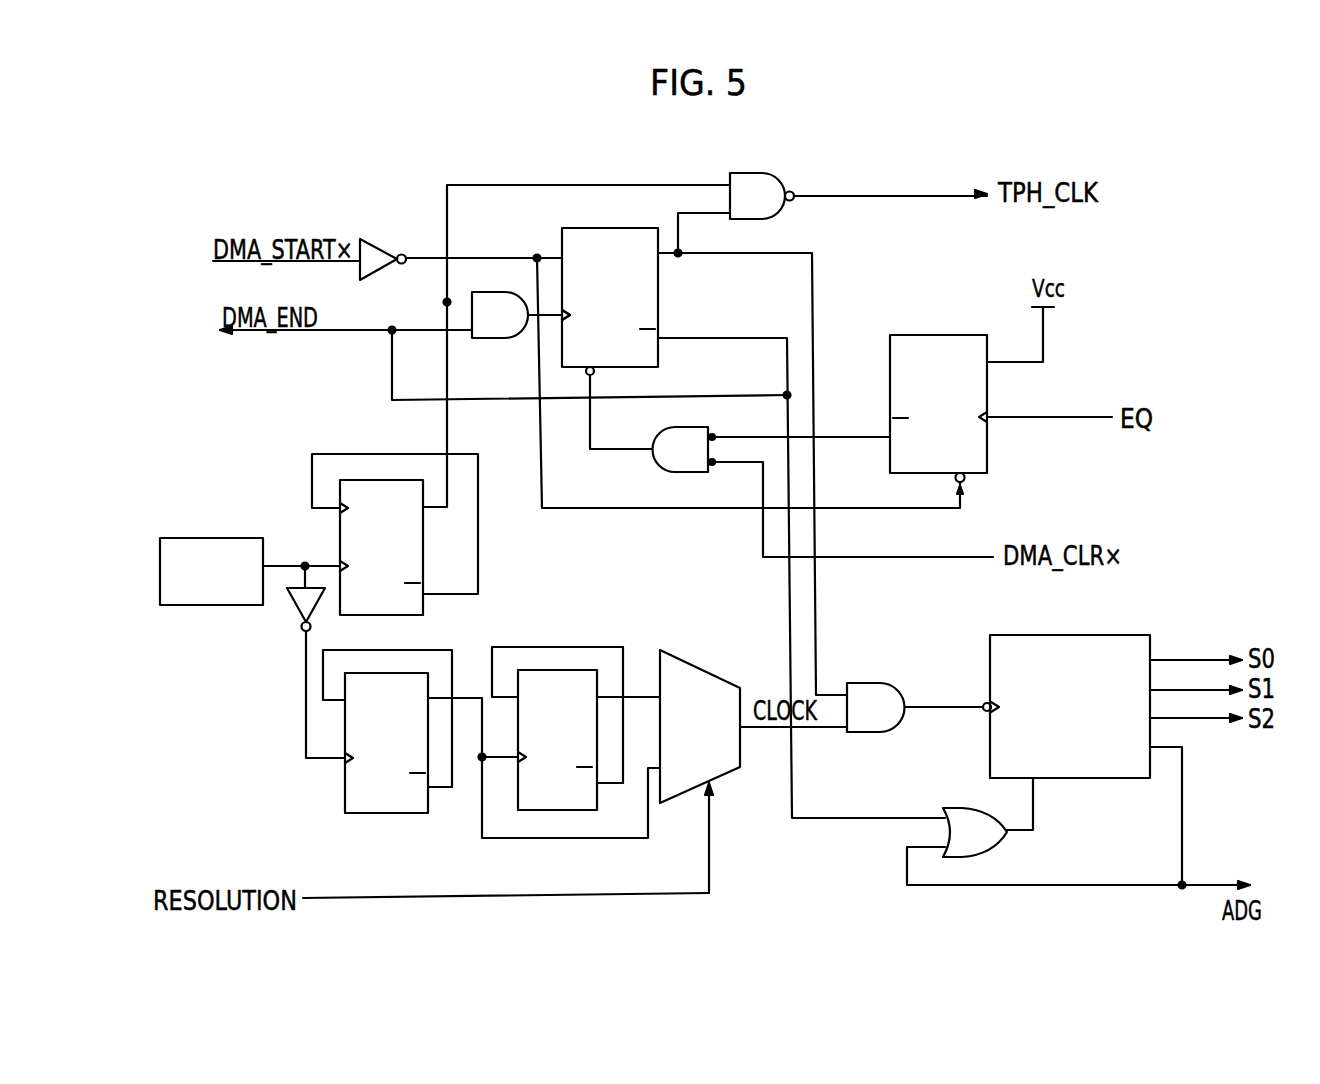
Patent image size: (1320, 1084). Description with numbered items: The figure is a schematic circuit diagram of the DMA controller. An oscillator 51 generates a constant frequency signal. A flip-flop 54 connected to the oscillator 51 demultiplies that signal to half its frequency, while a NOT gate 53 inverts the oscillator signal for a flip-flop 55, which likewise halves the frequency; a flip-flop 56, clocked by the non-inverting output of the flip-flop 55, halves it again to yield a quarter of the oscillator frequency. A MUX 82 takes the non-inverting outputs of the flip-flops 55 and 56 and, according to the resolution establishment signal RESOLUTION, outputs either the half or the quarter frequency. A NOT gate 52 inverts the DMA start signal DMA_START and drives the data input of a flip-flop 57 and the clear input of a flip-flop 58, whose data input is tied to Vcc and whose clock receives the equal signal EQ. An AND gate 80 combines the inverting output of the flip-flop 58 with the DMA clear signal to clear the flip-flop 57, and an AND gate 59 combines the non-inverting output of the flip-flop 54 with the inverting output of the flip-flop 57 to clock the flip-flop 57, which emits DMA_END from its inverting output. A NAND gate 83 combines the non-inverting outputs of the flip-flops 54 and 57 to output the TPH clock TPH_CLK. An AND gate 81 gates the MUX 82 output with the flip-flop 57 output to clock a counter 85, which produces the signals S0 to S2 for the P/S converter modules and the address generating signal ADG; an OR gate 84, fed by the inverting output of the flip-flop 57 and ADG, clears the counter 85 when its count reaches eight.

The oscillator 51 is at (208, 538).
The NOT gate 52 is at (378, 240).
The NOT gate 53 is at (292, 612).
The flip-flop 54 is at (336, 537).
The flip-flop 55 is at (344, 802).
The flip-flop 56 is at (530, 812).
The flip-flop 57 is at (556, 230).
The flip-flop 58 is at (910, 335).
The AND gate 59 is at (497, 340).
The AND gate 80 is at (653, 462).
The AND gate 81 is at (873, 682).
The MUX 82 is at (698, 665).
The NAND gate 83 is at (778, 172).
The OR gate 84 is at (958, 808).
The counter 85 is at (1056, 635).